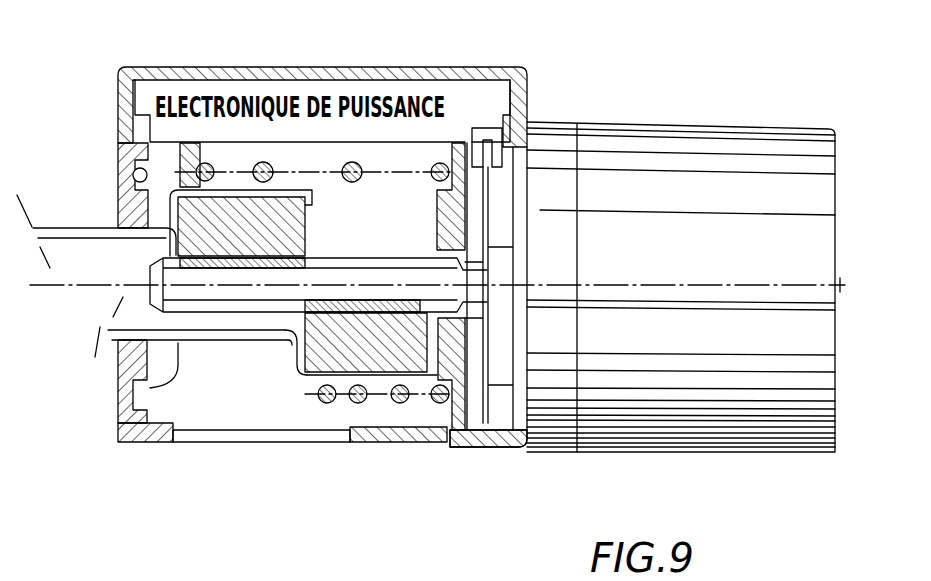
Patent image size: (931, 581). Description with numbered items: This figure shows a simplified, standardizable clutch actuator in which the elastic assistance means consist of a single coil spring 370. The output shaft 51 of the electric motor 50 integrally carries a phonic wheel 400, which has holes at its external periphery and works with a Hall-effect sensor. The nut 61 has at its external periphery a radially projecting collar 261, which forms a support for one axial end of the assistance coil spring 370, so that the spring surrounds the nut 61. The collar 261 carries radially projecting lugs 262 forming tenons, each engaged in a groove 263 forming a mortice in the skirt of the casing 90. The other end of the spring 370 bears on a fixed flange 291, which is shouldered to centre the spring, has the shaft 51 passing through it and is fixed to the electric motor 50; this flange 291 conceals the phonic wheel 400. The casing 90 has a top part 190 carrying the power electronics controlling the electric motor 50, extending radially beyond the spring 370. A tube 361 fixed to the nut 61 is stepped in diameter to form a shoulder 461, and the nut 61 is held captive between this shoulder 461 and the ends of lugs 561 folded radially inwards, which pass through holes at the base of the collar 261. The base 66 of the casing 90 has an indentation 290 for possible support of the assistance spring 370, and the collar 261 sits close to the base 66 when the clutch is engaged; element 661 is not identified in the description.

The electric motor 50 is at (773, 128).
The output shaft 51 is at (407, 262).
The nut 61 is at (300, 243).
The base of the casing 66 is at (122, 343).
The casing 90 is at (144, 442).
The top part of the casing 190 is at (492, 65).
The collar 261 is at (180, 150).
The lugs 262 is at (320, 440).
The groove 263 is at (197, 435).
The indentation 290 is at (133, 173).
The fixed flange 291 is at (447, 415).
The tube 361 is at (157, 362).
The assistance coil spring 370 is at (267, 163).
The phonic wheel 400 is at (520, 383).
The shoulder 461 is at (290, 352).
The lugs 561 is at (308, 205).
The arm end 661 is at (292, 345).